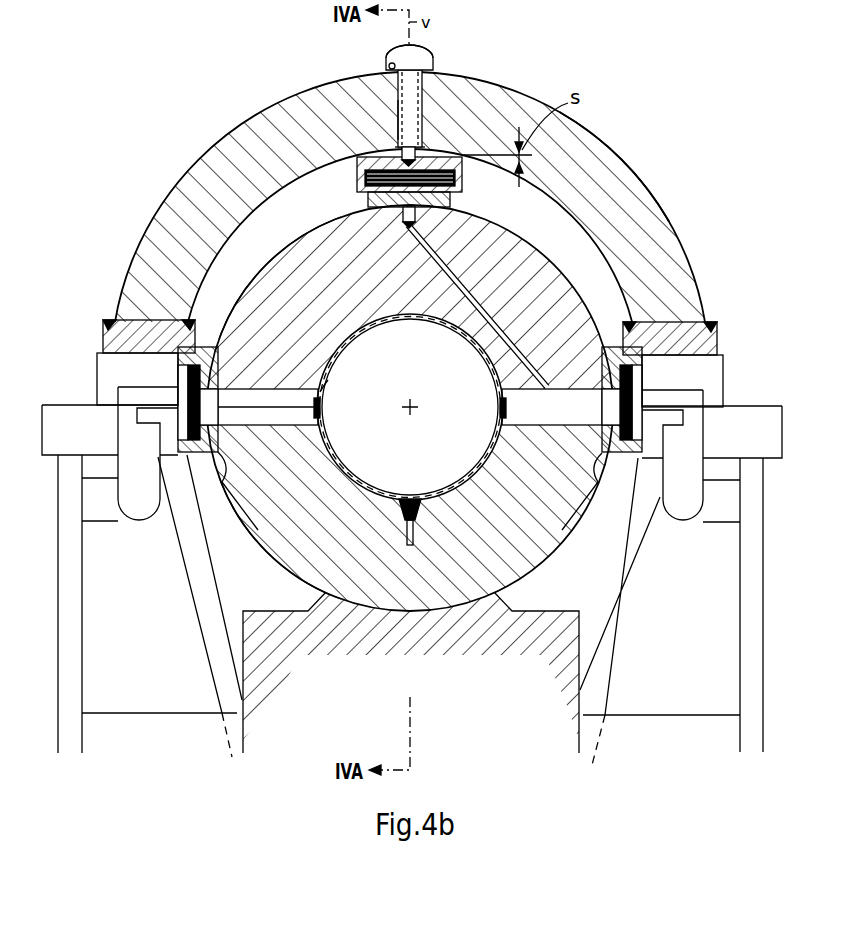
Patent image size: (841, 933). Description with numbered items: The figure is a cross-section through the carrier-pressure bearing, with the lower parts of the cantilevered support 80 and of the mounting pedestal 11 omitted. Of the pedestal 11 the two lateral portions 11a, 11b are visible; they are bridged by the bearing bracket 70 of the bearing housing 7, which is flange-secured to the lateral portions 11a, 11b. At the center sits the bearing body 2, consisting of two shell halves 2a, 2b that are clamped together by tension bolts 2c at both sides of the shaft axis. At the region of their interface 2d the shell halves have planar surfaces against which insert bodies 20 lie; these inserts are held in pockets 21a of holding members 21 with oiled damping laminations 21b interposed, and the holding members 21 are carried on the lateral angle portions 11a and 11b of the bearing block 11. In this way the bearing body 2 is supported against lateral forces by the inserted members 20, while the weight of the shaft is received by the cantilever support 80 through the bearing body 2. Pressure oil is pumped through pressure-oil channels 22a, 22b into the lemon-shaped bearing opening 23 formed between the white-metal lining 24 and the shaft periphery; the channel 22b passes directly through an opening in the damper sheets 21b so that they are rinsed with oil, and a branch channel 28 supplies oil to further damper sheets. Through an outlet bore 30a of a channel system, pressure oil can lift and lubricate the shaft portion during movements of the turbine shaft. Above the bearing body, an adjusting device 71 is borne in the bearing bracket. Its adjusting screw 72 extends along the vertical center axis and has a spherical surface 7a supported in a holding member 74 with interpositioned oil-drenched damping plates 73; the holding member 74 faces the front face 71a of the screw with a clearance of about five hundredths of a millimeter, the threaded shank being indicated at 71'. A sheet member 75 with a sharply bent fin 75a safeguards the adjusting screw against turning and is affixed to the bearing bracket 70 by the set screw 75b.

The bearing body 2 is at (558, 282).
The shell half 2a is at (263, 285).
The shell half 2b is at (272, 533).
The tension bolts 2c is at (408, 480).
The interface 2d is at (323, 386).
The bearing housing 7 is at (605, 156).
The spherical surface 7a is at (440, 213).
The mounting pedestal 11 is at (148, 670).
The lateral portion 11a is at (100, 475).
The lateral portion 11b is at (720, 472).
The insert bodies 20 is at (208, 358).
The holding members 21 is at (140, 322).
The pockets 21a is at (180, 437).
The damping laminations 21b is at (185, 380).
The pressure-oil channel 22a is at (197, 583).
The pressure-oil channel 22b is at (318, 415).
The bearing opening 23 is at (319, 402).
The white-metal lining 24 is at (421, 317).
The branch channel 28 is at (520, 266).
The outlet bore 30a is at (410, 497).
The bearing bracket 70 is at (280, 118).
The adjusting device 71 is at (365, 98).
The threaded bolt shank 71' is at (439, 93).
The front face 71a is at (450, 105).
The adjusting screw 72 is at (368, 200).
The damping plates 73 is at (365, 178).
The holding member 74 is at (462, 180).
The sheet member 75 is at (400, 57).
The fin 75a is at (428, 62).
The set screw 75b is at (390, 70).
The cantilevered support 80 is at (383, 622).